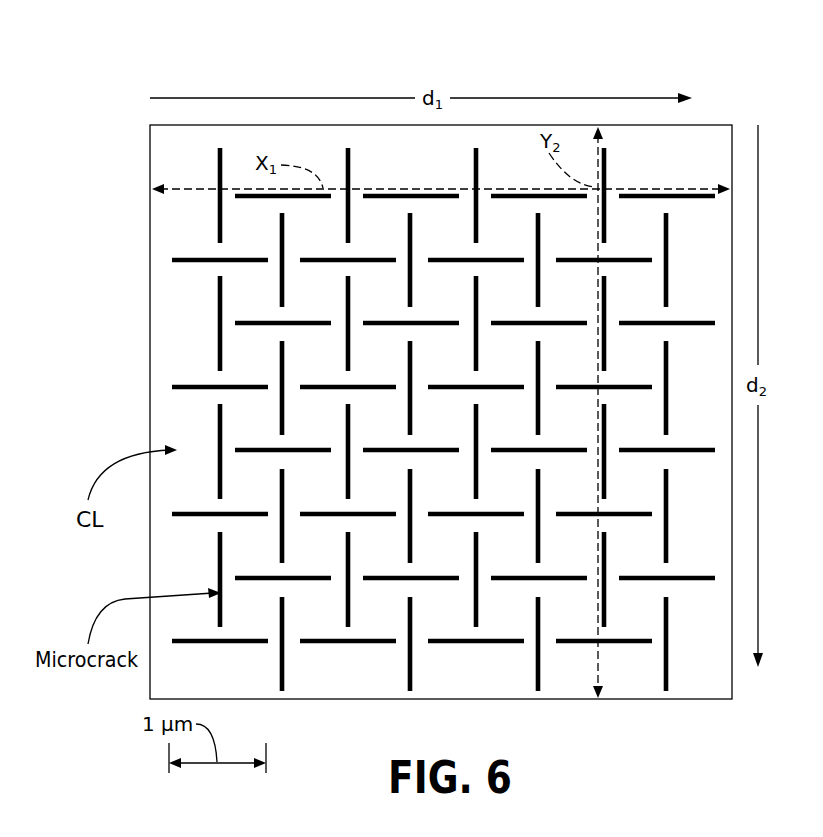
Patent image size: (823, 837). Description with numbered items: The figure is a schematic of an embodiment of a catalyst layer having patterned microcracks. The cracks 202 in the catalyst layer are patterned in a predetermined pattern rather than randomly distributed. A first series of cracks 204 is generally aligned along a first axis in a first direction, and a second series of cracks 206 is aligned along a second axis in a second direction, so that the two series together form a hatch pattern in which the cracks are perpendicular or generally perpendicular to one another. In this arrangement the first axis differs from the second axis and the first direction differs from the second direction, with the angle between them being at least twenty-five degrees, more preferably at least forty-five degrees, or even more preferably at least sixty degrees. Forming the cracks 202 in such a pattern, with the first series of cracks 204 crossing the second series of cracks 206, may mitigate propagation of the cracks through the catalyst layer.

The cracks 202 is at (155, 76).
The first series of cracks 204 is at (187, 385).
The second series of cracks 206 is at (218, 310).